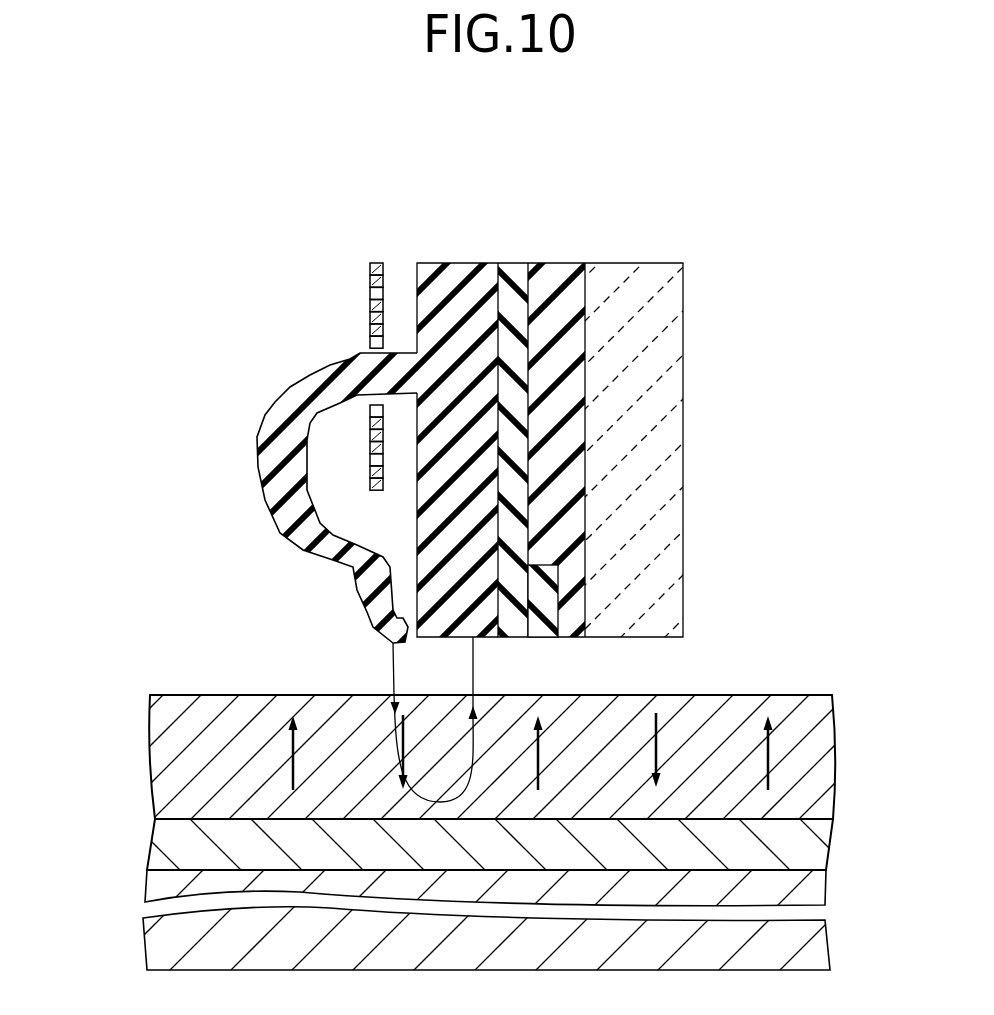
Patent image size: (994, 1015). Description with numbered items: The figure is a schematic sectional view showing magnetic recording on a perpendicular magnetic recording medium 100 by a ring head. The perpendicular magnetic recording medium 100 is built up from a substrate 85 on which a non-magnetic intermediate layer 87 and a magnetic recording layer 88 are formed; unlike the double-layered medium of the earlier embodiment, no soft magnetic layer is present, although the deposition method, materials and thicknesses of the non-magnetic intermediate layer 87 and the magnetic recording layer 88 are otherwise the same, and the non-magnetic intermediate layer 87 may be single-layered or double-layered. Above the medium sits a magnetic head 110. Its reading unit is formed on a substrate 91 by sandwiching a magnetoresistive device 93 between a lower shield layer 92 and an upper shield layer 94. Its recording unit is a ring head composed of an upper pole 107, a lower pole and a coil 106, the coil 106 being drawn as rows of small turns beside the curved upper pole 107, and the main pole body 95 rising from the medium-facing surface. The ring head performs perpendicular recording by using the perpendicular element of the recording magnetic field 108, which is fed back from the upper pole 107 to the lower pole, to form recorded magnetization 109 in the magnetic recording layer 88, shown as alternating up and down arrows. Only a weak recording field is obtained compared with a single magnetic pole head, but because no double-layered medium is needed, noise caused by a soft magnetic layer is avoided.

The substrate 85 is at (827, 890).
The non-magnetic intermediate layer 87 is at (834, 835).
The magnetic recording layer 88 is at (499, 757).
The substrate 91 is at (637, 262).
The lower shield layer 92 is at (560, 262).
The magnetoresistive device 93 is at (547, 630).
The upper shield layer 94 is at (516, 262).
The main pole 95 is at (465, 623).
The perpendicular magnetic recording medium 100 is at (495, 832).
The coil 106 is at (378, 262).
The upper pole 107 is at (362, 615).
The recording magnetic field 108 is at (392, 665).
The recorded magnetization 109 is at (290, 770).
The magnetic head 110 is at (497, 507).